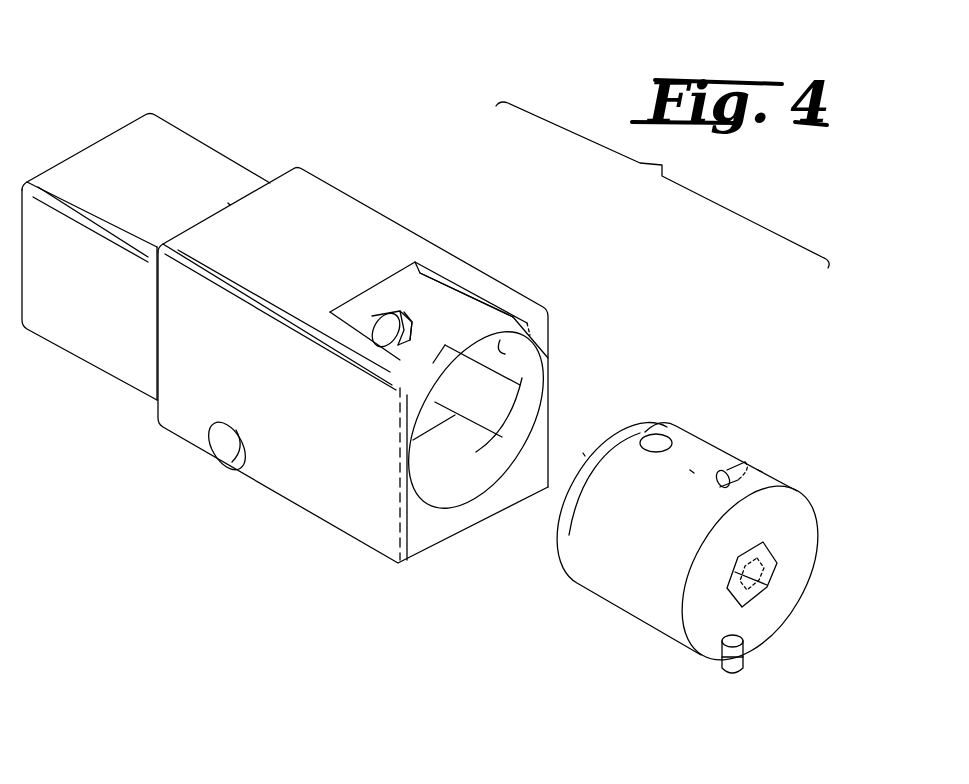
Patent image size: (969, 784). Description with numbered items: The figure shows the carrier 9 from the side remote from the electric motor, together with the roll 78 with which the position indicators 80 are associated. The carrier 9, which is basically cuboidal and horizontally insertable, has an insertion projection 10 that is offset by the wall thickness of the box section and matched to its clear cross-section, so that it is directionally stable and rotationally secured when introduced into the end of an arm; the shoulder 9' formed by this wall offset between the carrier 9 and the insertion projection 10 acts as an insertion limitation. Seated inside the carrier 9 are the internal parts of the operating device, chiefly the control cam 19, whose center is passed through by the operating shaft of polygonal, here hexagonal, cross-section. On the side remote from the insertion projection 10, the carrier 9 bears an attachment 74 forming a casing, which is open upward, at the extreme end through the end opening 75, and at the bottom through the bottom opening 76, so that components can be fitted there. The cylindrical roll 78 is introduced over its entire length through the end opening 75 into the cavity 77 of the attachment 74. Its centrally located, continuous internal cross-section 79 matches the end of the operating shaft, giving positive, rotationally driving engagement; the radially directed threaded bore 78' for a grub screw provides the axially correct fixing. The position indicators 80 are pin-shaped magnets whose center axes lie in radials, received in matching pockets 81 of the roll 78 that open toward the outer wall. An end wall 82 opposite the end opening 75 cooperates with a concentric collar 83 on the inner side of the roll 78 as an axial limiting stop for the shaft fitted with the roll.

The carrier 9 is at (353, 310).
The shoulder 9' is at (266, 114).
The insertion projection 10 is at (155, 173).
The control cam 19 is at (383, 310).
The attachment 74 is at (503, 282).
The end opening 75 is at (457, 492).
The bottom opening 76 is at (475, 433).
The cavity 77 is at (505, 340).
The roll 78 is at (741, 404).
The hole in cylindrical insert 78' is at (698, 381).
The internal cross-section 79 is at (742, 592).
The position indicators 80 is at (750, 458).
The pockets 81 is at (755, 471).
The end wall 82 is at (372, 297).
The collar 83 is at (582, 452).